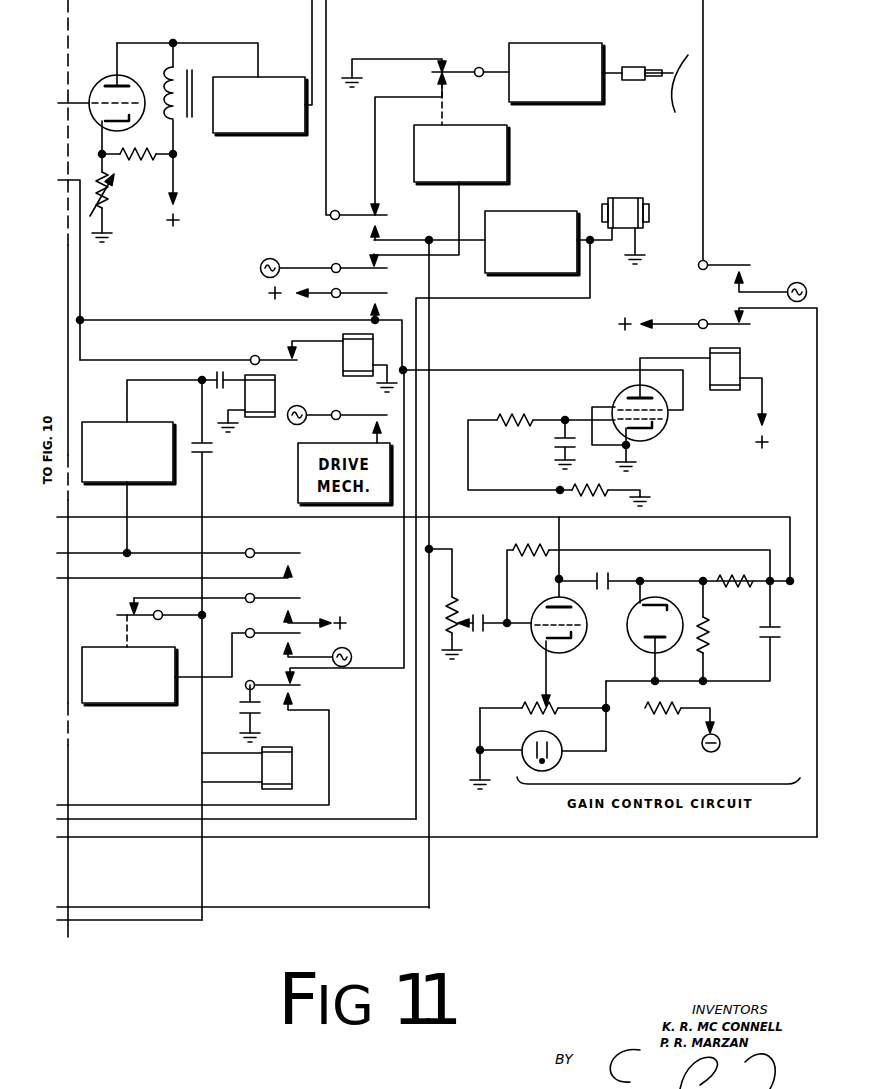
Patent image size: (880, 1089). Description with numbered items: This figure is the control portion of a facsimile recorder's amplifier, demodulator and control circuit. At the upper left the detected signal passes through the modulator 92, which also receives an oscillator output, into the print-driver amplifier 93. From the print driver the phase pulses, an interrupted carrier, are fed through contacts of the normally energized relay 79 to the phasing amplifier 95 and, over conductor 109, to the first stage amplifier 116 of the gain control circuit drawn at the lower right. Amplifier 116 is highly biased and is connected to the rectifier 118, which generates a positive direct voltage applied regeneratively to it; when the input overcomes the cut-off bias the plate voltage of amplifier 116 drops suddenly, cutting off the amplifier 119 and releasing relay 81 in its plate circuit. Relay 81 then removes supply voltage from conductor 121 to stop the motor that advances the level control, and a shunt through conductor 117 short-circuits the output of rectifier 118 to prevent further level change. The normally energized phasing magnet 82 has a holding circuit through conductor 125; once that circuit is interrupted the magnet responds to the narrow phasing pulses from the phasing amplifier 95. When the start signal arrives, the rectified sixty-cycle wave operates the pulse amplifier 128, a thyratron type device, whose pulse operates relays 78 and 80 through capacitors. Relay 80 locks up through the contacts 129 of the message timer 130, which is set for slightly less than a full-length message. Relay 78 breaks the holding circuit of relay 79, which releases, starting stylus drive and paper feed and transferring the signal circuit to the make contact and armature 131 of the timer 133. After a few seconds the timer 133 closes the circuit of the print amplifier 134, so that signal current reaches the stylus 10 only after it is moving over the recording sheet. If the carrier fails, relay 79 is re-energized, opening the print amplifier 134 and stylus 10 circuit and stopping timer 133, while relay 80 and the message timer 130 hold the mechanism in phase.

The stylus 10 is at (631, 67).
The relay 78 is at (252, 417).
The relay 79 is at (343, 366).
The relay 80 is at (283, 747).
The relay 81 is at (742, 362).
The phasing magnet 82 is at (625, 198).
The modulator 92 is at (107, 77).
The print-driver amplifier 93 is at (257, 134).
The phasing amplifier 95 is at (523, 211).
The conductor 109 is at (432, 343).
The first stage amplifier 116 is at (539, 647).
The conductor 117 is at (318, 518).
The rectifier 118 is at (655, 598).
The amplifier 119 is at (661, 432).
The conductor 121 is at (703, 135).
The conductor 125 is at (418, 516).
The pulse amplifier 128 is at (132, 422).
The contacts 129 is at (123, 609).
The message timer 130 is at (108, 704).
The armature 131 is at (475, 66).
The timer 133 is at (508, 158).
The print amplifier 134 is at (560, 103).